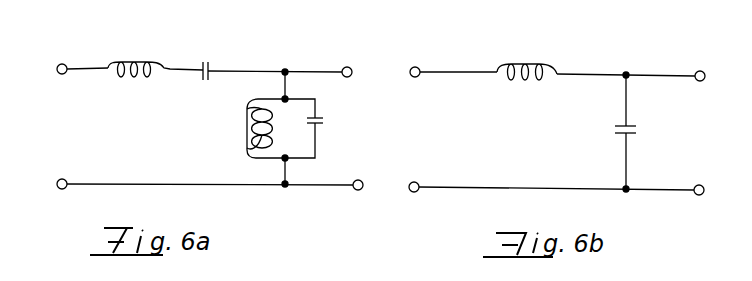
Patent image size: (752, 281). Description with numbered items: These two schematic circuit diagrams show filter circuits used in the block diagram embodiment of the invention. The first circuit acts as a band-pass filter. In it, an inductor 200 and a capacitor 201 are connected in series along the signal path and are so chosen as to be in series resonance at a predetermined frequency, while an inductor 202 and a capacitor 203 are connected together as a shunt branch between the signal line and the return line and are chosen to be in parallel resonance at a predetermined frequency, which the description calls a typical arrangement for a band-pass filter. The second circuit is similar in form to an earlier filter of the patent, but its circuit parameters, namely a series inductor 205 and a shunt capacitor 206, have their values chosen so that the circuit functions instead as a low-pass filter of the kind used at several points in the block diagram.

In FIG. 6A, the inductor 200 is at (145, 61).
In FIG. 6A, the capacitor 201 is at (210, 67).
In FIG. 6A, the inductor 202 is at (247, 128).
In FIG. 6A, the capacitor 203 is at (318, 127).
In FIG. 6B, the inductor 205 is at (542, 64).
In FIG. 6B, the capacitor 206 is at (632, 127).